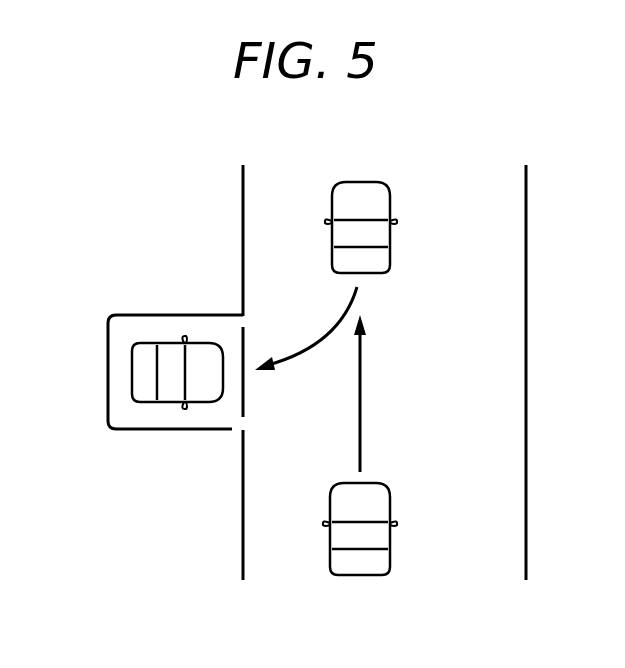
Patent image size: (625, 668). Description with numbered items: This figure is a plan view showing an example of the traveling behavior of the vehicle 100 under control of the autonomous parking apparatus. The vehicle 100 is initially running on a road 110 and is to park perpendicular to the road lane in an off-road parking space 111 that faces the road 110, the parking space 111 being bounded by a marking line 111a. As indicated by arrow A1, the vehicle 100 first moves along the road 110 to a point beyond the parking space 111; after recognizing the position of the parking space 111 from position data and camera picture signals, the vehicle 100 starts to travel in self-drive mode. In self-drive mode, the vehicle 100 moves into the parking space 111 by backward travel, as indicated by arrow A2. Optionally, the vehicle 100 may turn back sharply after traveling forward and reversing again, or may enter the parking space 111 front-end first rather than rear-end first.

The vehicle 100 is at (390, 248).
The road 110 is at (503, 460).
The parking space 111 is at (127, 332).
The parking space marking line 111a is at (144, 332).
The arrow A1 is at (376, 393).
The arrow A2 is at (306, 328).